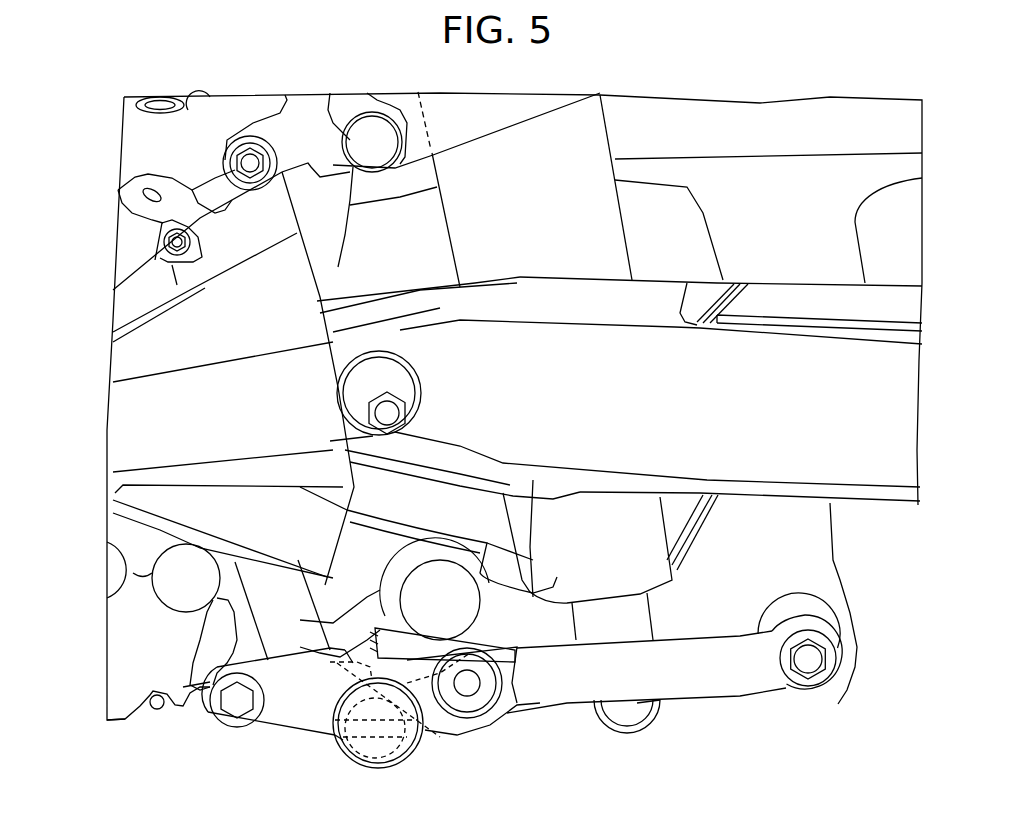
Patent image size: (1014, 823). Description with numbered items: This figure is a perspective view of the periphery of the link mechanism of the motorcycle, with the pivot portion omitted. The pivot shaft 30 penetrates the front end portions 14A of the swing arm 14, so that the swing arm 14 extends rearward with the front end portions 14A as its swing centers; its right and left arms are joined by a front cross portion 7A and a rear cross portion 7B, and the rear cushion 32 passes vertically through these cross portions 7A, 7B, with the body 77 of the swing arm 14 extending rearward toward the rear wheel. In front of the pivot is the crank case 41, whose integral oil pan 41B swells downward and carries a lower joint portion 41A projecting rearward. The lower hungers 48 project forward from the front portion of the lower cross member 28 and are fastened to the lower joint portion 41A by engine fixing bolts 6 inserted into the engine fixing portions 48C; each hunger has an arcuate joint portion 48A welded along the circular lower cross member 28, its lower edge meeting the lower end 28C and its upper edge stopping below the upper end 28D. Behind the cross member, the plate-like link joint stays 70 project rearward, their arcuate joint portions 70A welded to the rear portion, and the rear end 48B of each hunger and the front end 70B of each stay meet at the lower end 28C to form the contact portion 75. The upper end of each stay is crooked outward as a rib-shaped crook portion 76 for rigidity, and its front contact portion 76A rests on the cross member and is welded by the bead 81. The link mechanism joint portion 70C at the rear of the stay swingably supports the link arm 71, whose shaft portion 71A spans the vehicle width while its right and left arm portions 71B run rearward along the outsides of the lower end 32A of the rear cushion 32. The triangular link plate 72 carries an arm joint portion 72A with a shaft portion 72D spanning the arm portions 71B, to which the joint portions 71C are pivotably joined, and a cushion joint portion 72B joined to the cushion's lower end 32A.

The engine fixing bolt 6 is at (240, 707).
The front cross portion 7A is at (340, 265).
The rear cross portion 7B is at (852, 255).
The swing arm 14 is at (646, 311).
The front end portion 14A is at (367, 267).
The lower cross member 28 is at (320, 670).
The lower end of lower cross member 28C is at (350, 660).
The upper end of lower cross member 28D is at (330, 612).
The pivot shaft 30 is at (378, 414).
The rear cushion 32 is at (577, 428).
The lower end of rear cushion 32A is at (610, 717).
The crank case 41 is at (146, 687).
The lower joint portion 41A is at (205, 705).
The oil pan 41B is at (122, 697).
The lower hunger 48 is at (278, 732).
The arcuate joint portion 48A is at (335, 677).
The rear end of lower hunger 48B is at (363, 740).
The engine fixing portion 48C is at (243, 723).
The link joint stay 70 is at (396, 647).
The arcuate joint portion 70A is at (447, 742).
The front end of link joint stay 70B is at (383, 743).
The link mechanism joint portion 70C is at (470, 690).
The link arm 71 is at (664, 635).
The shaft portion 71A is at (438, 593).
The arm portion 71B is at (742, 673).
The joint portion 71C is at (840, 667).
The link plate 72 is at (791, 649).
The arm joint portion 72A is at (822, 680).
The cushion joint portion 72B is at (637, 703).
The shaft portion 72D is at (820, 613).
The contact portion 75 is at (380, 733).
The rib-shaped crook portion 76 is at (384, 602).
The contact portion 76A is at (350, 618).
The swing arm body 77 is at (900, 375).
The bead 81 is at (363, 643).